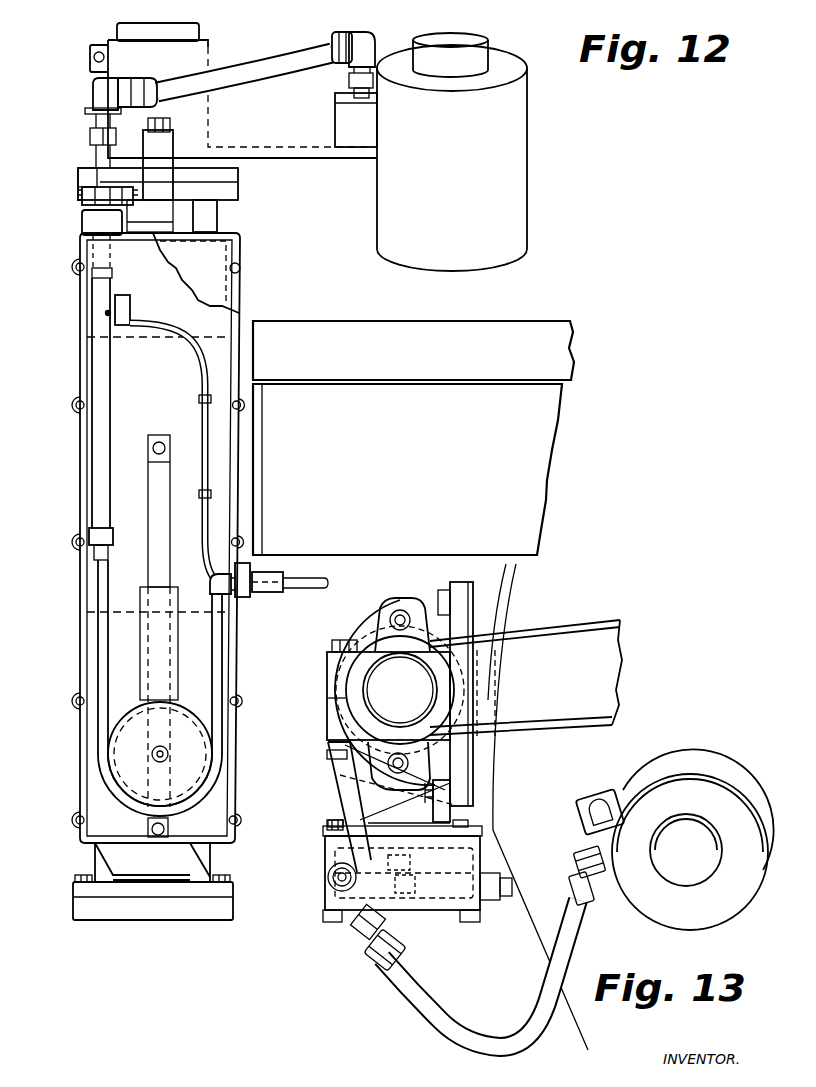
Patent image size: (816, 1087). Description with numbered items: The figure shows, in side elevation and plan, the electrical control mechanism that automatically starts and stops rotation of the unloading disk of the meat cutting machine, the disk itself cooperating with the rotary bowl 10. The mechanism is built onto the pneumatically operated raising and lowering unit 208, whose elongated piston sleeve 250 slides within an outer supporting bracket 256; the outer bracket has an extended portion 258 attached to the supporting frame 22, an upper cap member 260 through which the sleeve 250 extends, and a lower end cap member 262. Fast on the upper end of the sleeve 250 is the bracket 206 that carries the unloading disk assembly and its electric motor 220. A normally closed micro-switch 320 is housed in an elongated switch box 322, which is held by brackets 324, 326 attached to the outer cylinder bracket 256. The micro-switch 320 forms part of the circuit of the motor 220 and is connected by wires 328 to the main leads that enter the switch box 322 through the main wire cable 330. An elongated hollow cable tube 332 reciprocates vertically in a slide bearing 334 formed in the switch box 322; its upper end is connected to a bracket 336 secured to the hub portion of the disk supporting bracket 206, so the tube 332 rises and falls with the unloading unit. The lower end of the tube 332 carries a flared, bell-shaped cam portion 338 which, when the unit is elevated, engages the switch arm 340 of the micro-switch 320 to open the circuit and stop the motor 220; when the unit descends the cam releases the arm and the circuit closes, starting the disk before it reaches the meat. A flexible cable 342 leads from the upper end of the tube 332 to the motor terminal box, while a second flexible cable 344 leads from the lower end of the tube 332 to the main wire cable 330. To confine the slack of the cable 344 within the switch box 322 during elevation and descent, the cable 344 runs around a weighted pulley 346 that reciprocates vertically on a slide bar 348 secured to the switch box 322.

In FIG. 12, the rotary bowl 10 is at (550, 322).
In FIG. 12, the supporting frame 22 is at (552, 424).
In FIG. 12, the bracket 206 is at (235, 50).
In FIG. 13, the bracket 206 is at (533, 628).
In FIG. 12, the pneumatically operated raising and lowering unit 208 is at (73, 58).
In FIG. 13, the pneumatically operated raising and lowering unit 208 is at (343, 625).
In FIG. 12, the electric motor 220 is at (515, 147).
In FIG. 13, the electric motor 220 is at (690, 740).
In FIG. 13, the elongated sleeve 250 is at (500, 688).
In FIG. 12, the outer supporting bracket 256 is at (218, 220).
In FIG. 13, the outer supporting bracket 256 is at (343, 680).
In FIG. 13, the extended portion 258 is at (460, 584).
In FIG. 12, the upper cap member 260 is at (240, 178).
In FIG. 12, the end cap member 262 is at (165, 912).
In FIG. 12, the micro-switch 320 is at (131, 305).
In FIG. 12, the switch box 322 is at (82, 493).
In FIG. 13, the switch box 322 is at (482, 856).
In FIG. 12, the bracket 324 is at (100, 336).
In FIG. 13, the bracket 324 is at (452, 795).
In FIG. 12, the bracket 326 is at (107, 855).
In FIG. 13, the bracket 326 is at (330, 818).
In FIG. 12, the wires 328 is at (203, 370).
In FIG. 12, the main wire cable 330 is at (310, 583).
In FIG. 12, the cable tube 332 is at (100, 434).
In FIG. 12, the slide bearing 334 is at (85, 225).
In FIG. 12, the bracket 336 is at (87, 188).
In FIG. 13, the bracket 336 is at (338, 788).
In FIG. 12, the cam portion 338 is at (112, 530).
In FIG. 12, the switch arm 340 is at (106, 312).
In FIG. 12, the flexible cable 342 is at (302, 40).
In FIG. 13, the flexible cable 342 is at (462, 1045).
In FIG. 12, the flexible cable 344 is at (100, 655).
In FIG. 12, the weighted pulley 346 is at (183, 707).
In FIG. 12, the slide bar 348 is at (162, 574).